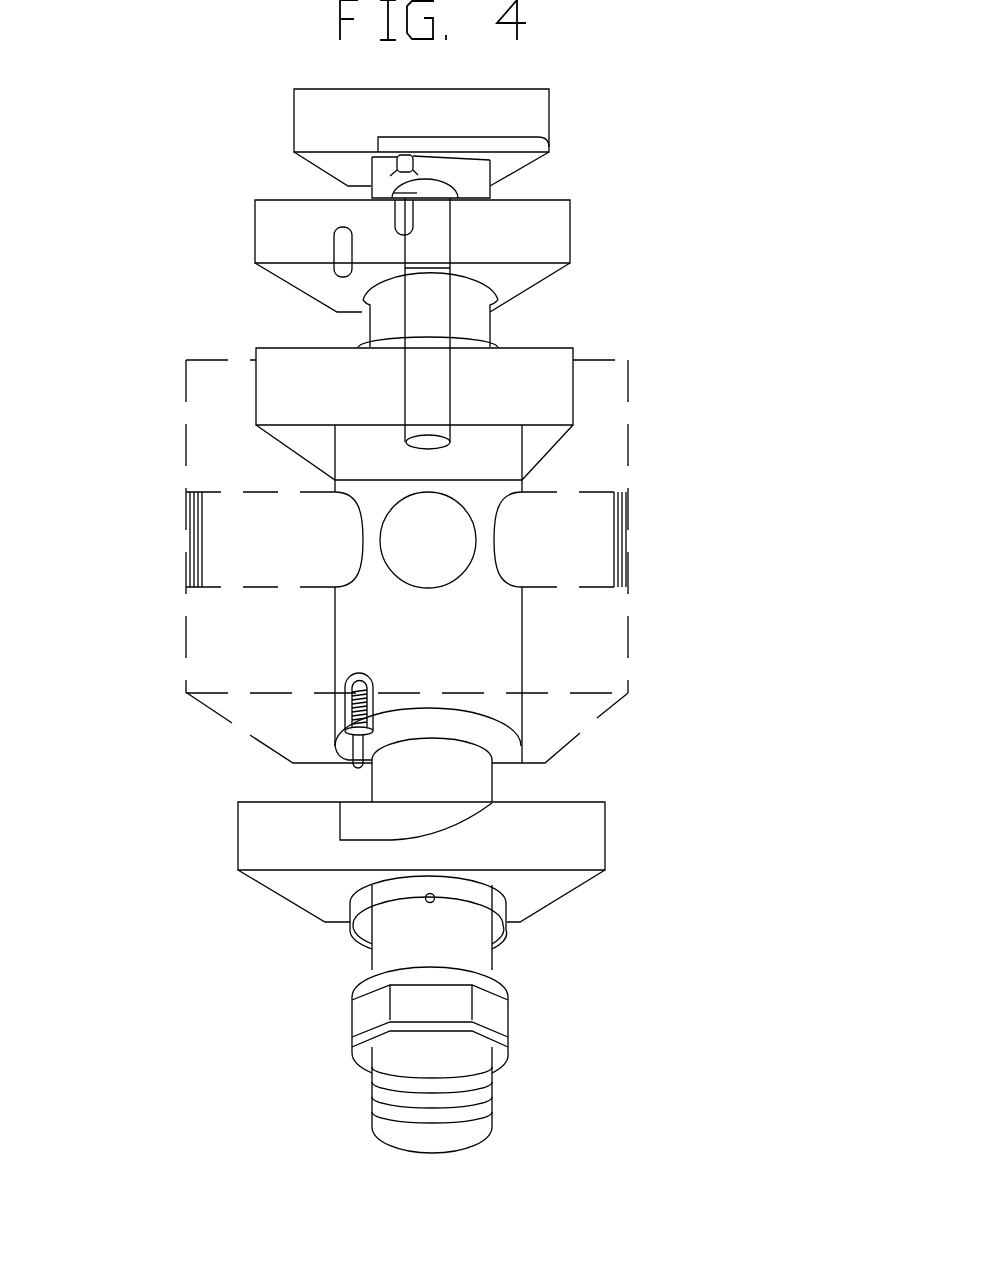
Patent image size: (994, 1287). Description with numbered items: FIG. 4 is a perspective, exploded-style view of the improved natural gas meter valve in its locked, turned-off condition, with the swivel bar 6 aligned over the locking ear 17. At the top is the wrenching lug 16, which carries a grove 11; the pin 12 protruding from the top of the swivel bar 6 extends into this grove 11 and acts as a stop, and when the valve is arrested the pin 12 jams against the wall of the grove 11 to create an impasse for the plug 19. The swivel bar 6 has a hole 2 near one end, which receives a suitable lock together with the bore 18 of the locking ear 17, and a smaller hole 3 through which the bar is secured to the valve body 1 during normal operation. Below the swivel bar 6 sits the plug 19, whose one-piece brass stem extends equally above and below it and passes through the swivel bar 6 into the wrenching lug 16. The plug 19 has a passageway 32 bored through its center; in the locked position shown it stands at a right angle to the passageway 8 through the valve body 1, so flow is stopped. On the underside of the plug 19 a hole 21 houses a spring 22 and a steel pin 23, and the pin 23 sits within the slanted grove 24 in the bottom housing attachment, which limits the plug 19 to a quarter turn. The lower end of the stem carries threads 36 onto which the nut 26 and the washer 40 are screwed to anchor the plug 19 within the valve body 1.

The valve body 1 is at (607, 676).
The hole 2 is at (413, 225).
The hole 3 is at (315, 272).
The swivel bar 6 is at (553, 250).
The passageway 8 is at (590, 559).
The grove 11 is at (522, 145).
The pin 12 is at (375, 161).
The wrenching lug 16 is at (540, 119).
The locking ear 17 is at (552, 363).
The bore 18 is at (438, 386).
The plug 19 is at (467, 646).
The hole 21 is at (325, 676).
The spring 22 is at (332, 706).
The pin 23 is at (335, 772).
The slanted grove 24 is at (335, 822).
The nut 26 is at (510, 1012).
The passageway 32 is at (395, 559).
The threads 36 is at (354, 1100).
The washer 40 is at (507, 932).